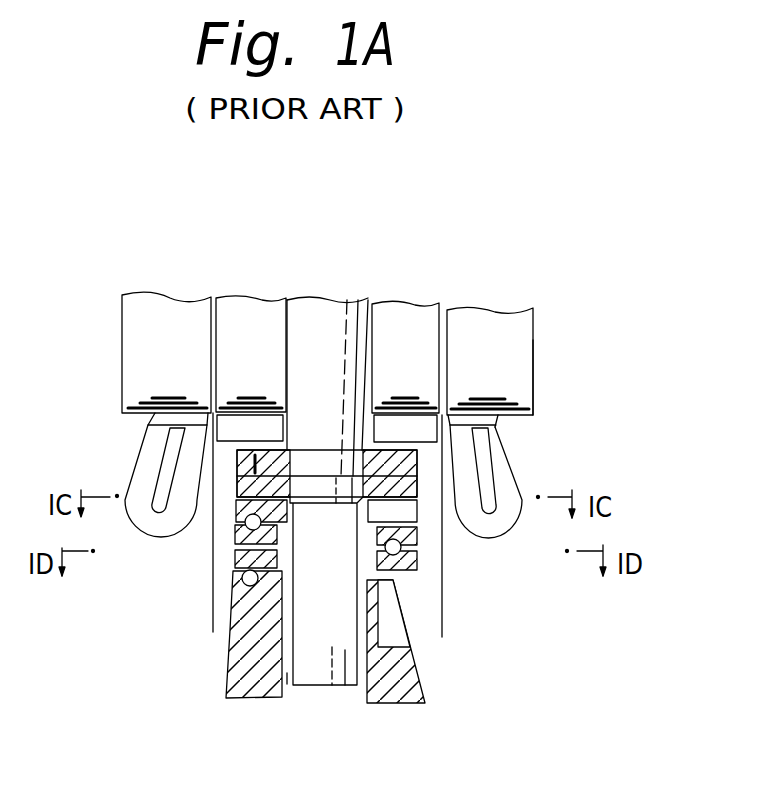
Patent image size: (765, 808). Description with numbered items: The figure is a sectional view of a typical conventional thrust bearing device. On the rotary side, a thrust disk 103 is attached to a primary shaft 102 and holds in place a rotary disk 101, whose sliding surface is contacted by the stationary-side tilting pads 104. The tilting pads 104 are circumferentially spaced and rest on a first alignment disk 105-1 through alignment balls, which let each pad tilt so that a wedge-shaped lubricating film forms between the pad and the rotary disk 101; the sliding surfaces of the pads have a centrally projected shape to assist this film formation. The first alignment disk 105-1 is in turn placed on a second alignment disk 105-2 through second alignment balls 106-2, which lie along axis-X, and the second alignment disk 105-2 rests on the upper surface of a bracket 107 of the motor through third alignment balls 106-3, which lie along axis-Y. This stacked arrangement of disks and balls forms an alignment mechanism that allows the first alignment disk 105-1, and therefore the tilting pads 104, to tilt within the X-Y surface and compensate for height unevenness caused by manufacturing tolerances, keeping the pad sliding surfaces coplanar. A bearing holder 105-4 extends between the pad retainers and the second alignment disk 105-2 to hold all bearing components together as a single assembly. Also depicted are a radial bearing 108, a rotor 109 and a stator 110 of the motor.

The rotary disk 101 is at (395, 512).
The primary shaft 102 is at (371, 334).
The thrust disk 103 is at (420, 459).
The tilting pads 104 is at (246, 517).
The first alignment disk 105-1 is at (240, 512).
The second alignment disk 105-2 is at (233, 569).
The bearing holder 105-4 is at (237, 542).
The second alignment balls 106-2 is at (372, 556).
The third alignment balls 106-3 is at (240, 574).
The bracket 107 is at (235, 667).
The radial bearing 108 is at (288, 673).
The rotor 109 is at (447, 365).
The stator 110 is at (533, 375).